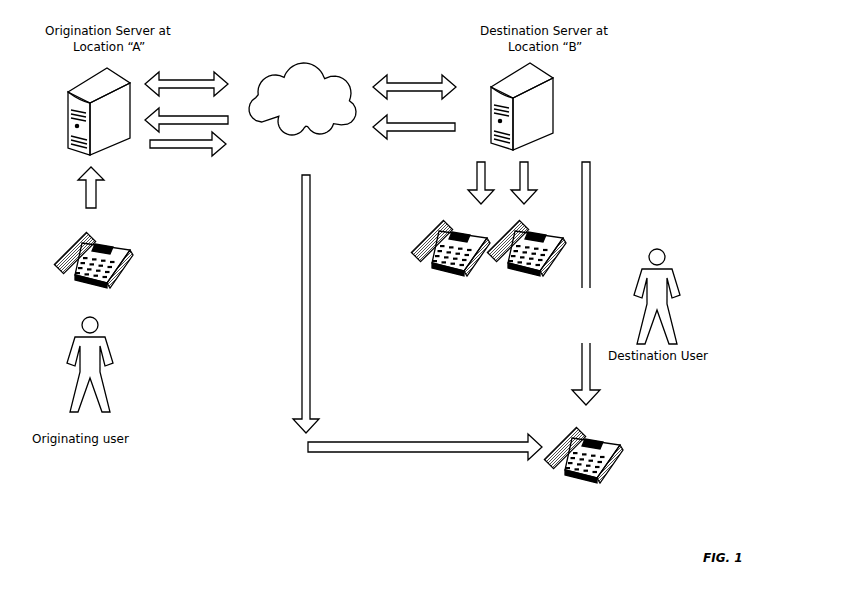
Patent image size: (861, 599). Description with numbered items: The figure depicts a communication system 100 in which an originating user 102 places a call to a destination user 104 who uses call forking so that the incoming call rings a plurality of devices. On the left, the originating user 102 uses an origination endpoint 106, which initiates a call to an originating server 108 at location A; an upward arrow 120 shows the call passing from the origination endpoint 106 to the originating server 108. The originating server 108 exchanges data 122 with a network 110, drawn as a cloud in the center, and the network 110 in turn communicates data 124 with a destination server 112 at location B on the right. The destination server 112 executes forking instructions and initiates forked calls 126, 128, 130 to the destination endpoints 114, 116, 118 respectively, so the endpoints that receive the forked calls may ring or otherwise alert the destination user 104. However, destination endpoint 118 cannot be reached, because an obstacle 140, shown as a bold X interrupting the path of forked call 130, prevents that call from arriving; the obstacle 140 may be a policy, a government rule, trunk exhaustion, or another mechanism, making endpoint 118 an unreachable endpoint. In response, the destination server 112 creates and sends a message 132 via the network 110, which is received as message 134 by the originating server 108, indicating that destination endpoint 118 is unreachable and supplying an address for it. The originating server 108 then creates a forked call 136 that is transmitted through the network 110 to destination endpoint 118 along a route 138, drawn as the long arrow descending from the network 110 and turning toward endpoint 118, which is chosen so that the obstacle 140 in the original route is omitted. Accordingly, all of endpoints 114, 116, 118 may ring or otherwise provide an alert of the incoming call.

The communication system 100 is at (780, 52).
The originating user 102 is at (110, 343).
The destination user 104 is at (668, 273).
The origination endpoint 106 is at (130, 250).
The originating server 108 is at (70, 90).
The network 110 is at (320, 78).
The destination server 112 is at (548, 100).
The destination endpoint 114 is at (412, 257).
The destination endpoint 116 is at (520, 270).
The destination endpoint 118 is at (615, 455).
The call from originating device to origination server 120 is at (96, 188).
The data 122 is at (186, 76).
The data 124 is at (414, 81).
The forked call 126 is at (477, 176).
The forked call 128 is at (528, 176).
The forked call 130 is at (590, 176).
The message 132 is at (414, 121).
The message 134 is at (186, 116).
The forked call 136 is at (188, 148).
The route 138 is at (322, 304).
The obstacle 140 is at (562, 328).